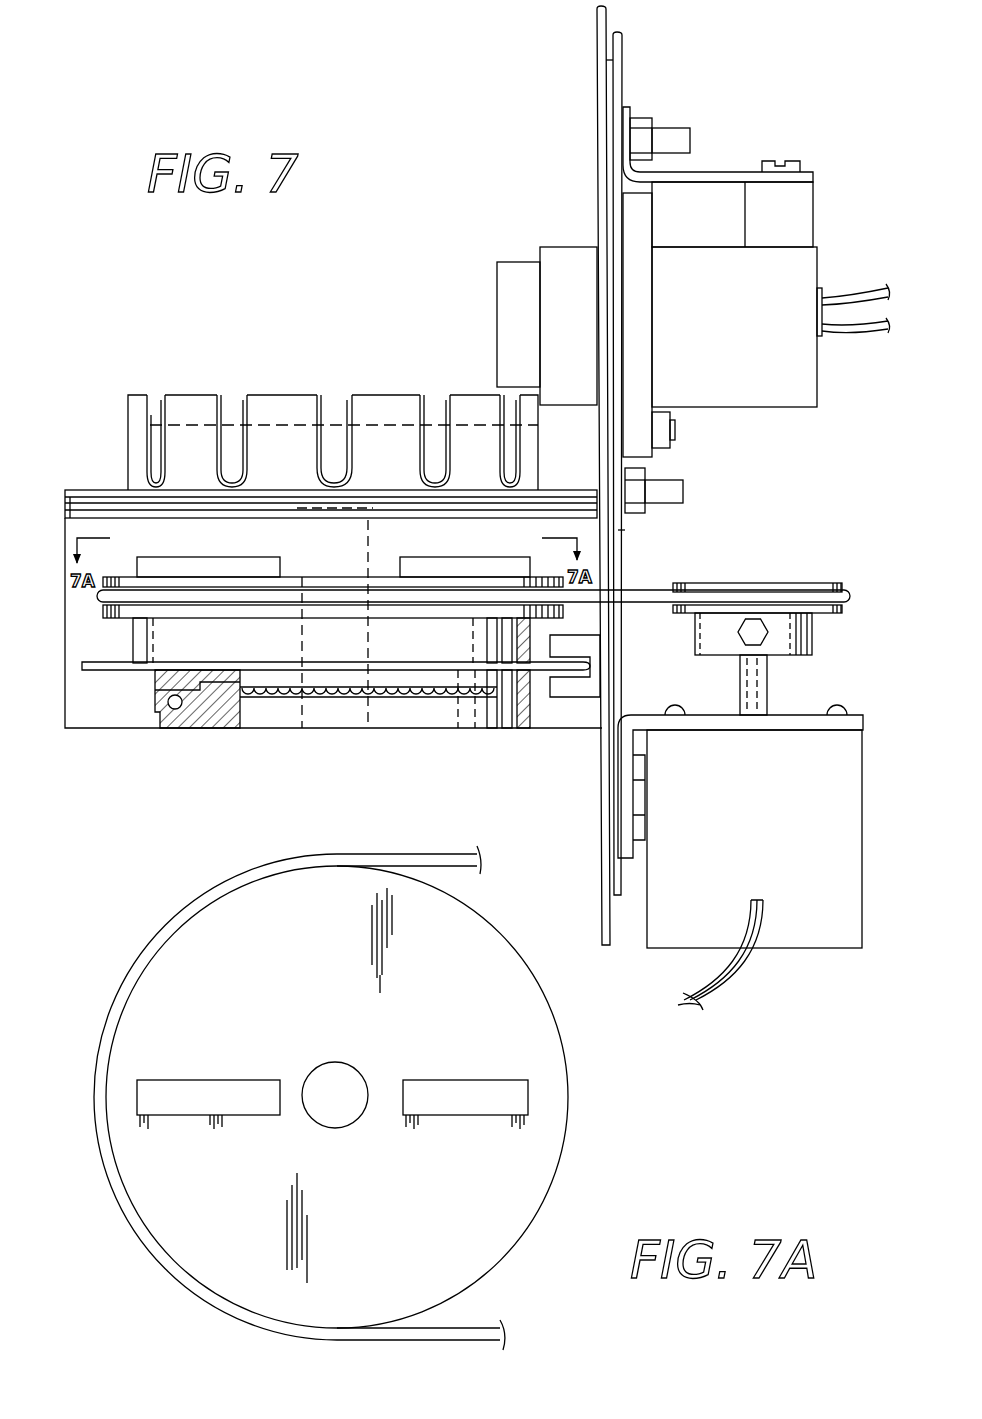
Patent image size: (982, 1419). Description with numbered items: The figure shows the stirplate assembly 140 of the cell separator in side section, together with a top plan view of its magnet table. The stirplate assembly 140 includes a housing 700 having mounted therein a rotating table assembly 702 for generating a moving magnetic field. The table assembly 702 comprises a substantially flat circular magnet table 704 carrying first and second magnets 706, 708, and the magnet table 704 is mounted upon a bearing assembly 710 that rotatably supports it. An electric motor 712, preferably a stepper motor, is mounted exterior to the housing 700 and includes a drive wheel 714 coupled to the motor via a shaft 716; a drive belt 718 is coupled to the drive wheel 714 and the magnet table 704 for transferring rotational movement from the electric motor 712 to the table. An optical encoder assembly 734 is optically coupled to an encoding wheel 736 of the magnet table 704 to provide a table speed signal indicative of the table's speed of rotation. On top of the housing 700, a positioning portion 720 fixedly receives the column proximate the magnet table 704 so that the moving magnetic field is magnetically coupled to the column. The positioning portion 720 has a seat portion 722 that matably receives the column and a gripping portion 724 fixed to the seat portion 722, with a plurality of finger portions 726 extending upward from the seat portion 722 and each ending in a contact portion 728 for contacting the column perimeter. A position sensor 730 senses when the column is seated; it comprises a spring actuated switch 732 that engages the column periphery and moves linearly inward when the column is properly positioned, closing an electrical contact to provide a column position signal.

In FIG. 7, the stirplate assembly 140 is at (395, 275).
In FIG. 7, the housing 700 is at (67, 685).
In FIG. 7, the rotating table assembly 702 is at (298, 558).
In FIG. 7, the magnet table 704 is at (105, 612).
In FIG. 7A, the magnet table 704 is at (557, 1163).
In FIG. 7, the first magnet 706 is at (233, 557).
In FIG. 7A, the first magnet 706 is at (200, 1080).
In FIG. 7, the second magnet 708 is at (436, 557).
In FIG. 7A, the second magnet 708 is at (480, 1080).
In FIG. 7, the bearing assembly 710 is at (160, 705).
In FIG. 7, the electric motor 712 is at (862, 862).
In FIG. 7, the drive wheel 714 is at (840, 583).
In FIG. 7, the shaft 716 is at (770, 678).
In FIG. 7, the drive belt 718 is at (643, 590).
In FIG. 7A, the drive belt 718 is at (400, 1345).
In FIG. 7, the positioning portion 720 is at (297, 388).
In FIG. 7, the seat portion 722 is at (376, 508).
In FIG. 7, the gripping portion 724 is at (365, 388).
In FIG. 7, the finger portions 726 is at (225, 430).
In FIG. 7, the contact portion 728 is at (155, 425).
In FIG. 7, the position sensor 730 is at (568, 222).
In FIG. 7, the spring actuated switch 732 is at (497, 262).
In FIG. 7, the optical encoder assembly 734 is at (570, 700).
In FIG. 7, the encoding wheel 736 is at (538, 668).